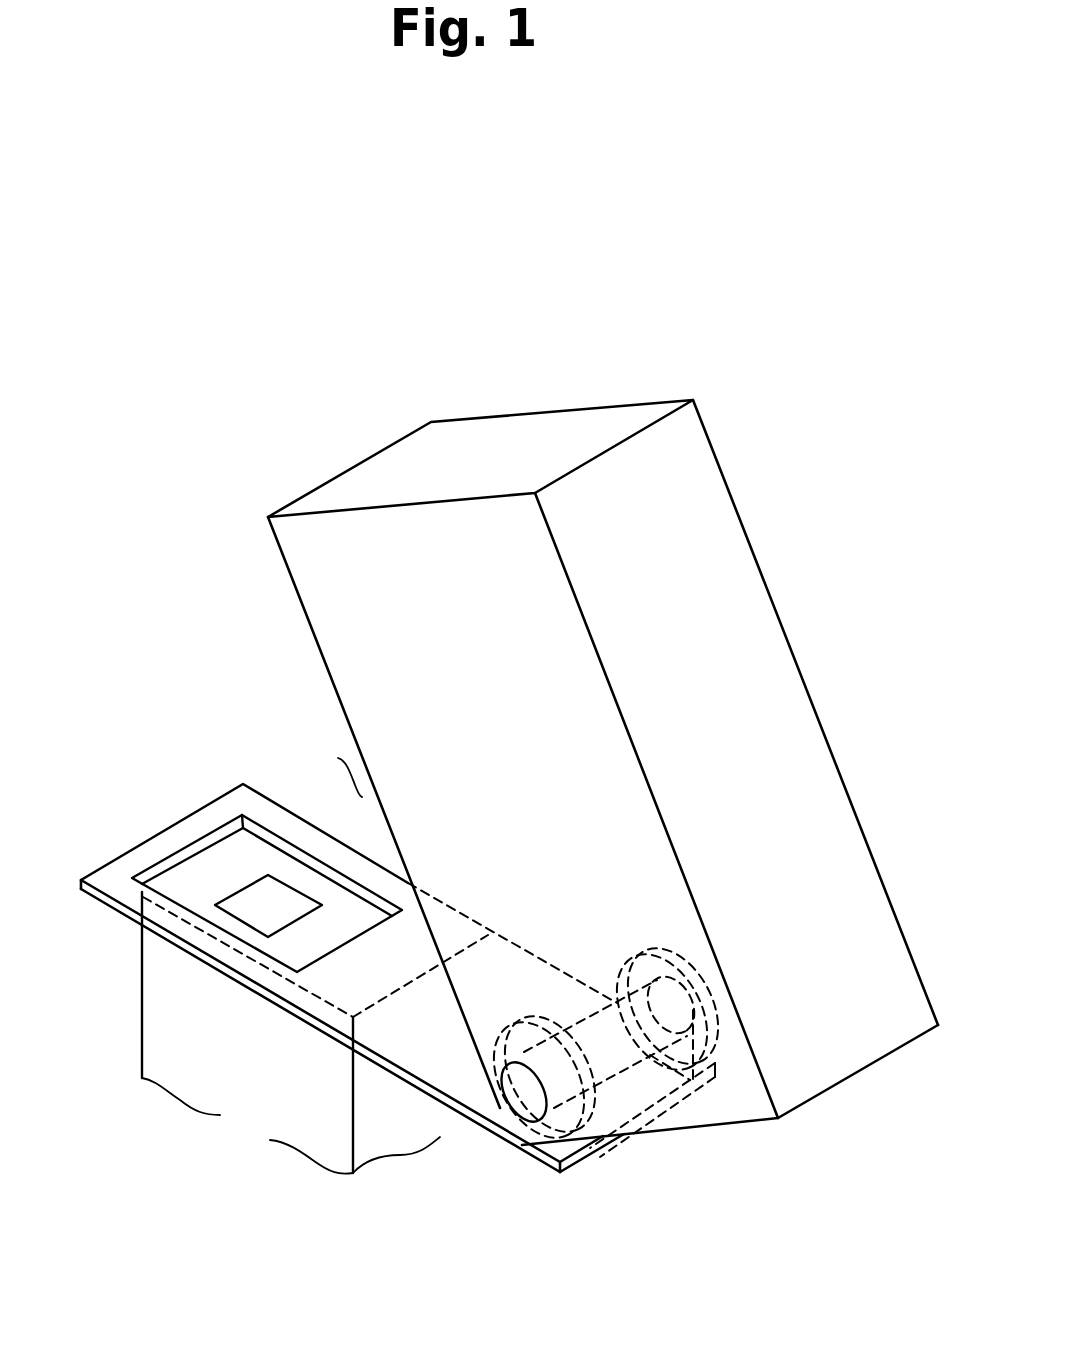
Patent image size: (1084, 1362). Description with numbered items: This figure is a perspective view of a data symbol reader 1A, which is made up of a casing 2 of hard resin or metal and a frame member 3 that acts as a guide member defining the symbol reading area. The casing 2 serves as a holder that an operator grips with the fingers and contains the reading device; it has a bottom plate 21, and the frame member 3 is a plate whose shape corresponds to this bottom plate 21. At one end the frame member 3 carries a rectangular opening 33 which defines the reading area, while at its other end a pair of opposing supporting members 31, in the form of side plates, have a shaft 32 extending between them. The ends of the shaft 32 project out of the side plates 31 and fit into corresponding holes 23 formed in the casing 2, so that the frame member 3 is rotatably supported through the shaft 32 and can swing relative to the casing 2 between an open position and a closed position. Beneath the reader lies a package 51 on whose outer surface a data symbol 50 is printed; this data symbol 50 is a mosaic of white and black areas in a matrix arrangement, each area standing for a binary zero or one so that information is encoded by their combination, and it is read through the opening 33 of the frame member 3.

The data symbol reader 1A is at (693, 311).
The casing 2 is at (735, 495).
The bottom plate 21 is at (307, 620).
The holes 23 is at (527, 1100).
The frame member 3 is at (203, 803).
The supporting members 31 is at (497, 1110).
The shaft 32 is at (538, 1130).
The rectangular opening 33 is at (190, 882).
The data symbol 50 is at (277, 900).
The package 51 is at (153, 963).